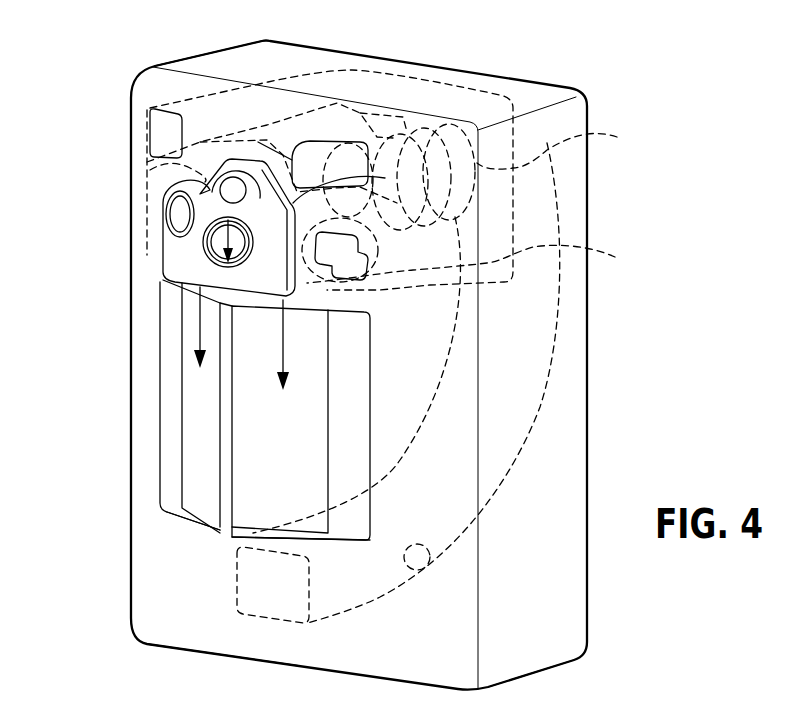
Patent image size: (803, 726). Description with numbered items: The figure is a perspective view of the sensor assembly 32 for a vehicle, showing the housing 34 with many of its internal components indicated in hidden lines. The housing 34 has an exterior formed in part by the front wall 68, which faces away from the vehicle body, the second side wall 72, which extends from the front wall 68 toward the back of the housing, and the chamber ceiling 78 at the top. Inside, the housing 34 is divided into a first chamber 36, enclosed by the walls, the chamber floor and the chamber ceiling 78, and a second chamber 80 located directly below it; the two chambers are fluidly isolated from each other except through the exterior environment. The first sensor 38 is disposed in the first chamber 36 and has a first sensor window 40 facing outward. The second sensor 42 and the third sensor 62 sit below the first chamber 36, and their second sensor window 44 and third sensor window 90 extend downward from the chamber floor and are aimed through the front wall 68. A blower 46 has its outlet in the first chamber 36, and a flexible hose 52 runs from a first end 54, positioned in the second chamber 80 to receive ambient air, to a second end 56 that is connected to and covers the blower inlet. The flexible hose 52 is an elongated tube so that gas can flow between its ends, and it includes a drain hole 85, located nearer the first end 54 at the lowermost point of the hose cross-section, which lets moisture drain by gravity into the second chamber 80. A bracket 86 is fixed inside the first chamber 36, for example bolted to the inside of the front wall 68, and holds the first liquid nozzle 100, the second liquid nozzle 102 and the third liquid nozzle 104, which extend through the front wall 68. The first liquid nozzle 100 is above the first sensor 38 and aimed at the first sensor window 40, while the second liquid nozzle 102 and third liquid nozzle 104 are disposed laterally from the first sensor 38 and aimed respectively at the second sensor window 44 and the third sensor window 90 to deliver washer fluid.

The sensor assembly 32 is at (116, 90).
The housing 34 is at (124, 373).
The first chamber 36 is at (383, 100).
The first sensor 38 is at (222, 238).
The first sensor window 40 is at (217, 248).
The second sensor 42 is at (195, 518).
The second sensor window 44 is at (193, 463).
The blower 46 is at (403, 140).
The flexible hose 52 is at (560, 323).
The first end 54 is at (237, 583).
The second end 56 is at (563, 146).
The third sensor 62 is at (247, 537).
The front wall 68 is at (167, 612).
The second side wall 72 is at (557, 457).
The chamber ceiling 78 is at (266, 52).
The second chamber 80 is at (527, 600).
The drain hole 85 is at (413, 570).
The bracket 86 is at (277, 90).
The third sensor window 90 is at (293, 412).
The first liquid nozzle 100 is at (233, 190).
The second liquid nozzle 102 is at (180, 212).
The third liquid nozzle 104 is at (483, 261).